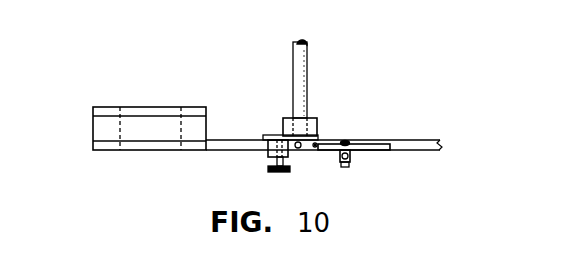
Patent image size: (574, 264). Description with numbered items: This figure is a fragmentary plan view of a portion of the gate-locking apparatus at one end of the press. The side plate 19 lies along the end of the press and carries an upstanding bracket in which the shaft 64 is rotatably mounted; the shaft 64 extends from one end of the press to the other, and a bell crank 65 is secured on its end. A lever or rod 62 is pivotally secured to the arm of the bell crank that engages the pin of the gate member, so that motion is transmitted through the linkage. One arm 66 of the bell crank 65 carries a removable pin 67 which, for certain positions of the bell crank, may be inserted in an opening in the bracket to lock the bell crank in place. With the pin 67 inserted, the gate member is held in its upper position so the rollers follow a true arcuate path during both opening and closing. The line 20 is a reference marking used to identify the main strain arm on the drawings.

The side plate 19 is at (426, 151).
The inclined line 20 is at (94, 112).
The lever 62 is at (348, 163).
The shaft 64 is at (299, 83).
The bell crank 65 is at (365, 148).
The arm 66 is at (268, 152).
The removable pin 67 is at (272, 170).